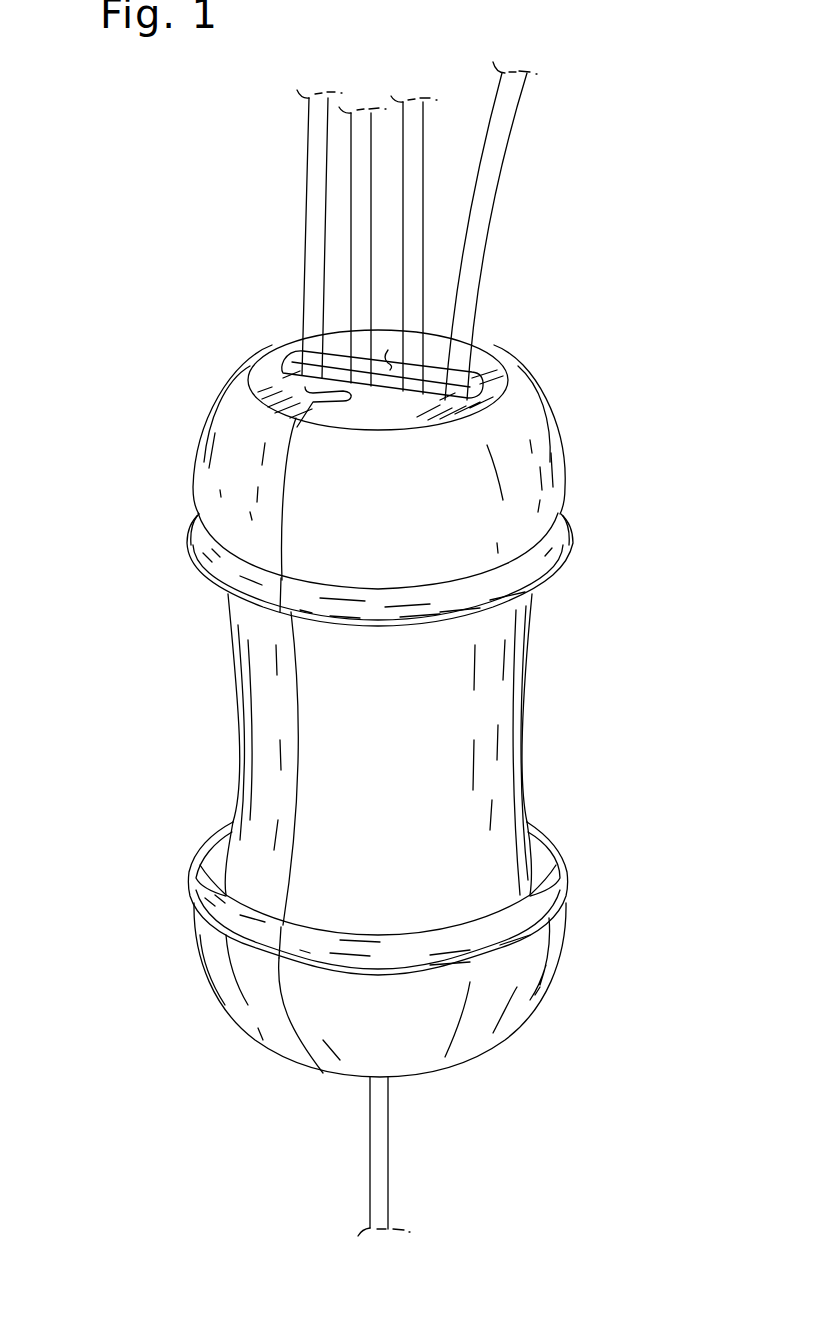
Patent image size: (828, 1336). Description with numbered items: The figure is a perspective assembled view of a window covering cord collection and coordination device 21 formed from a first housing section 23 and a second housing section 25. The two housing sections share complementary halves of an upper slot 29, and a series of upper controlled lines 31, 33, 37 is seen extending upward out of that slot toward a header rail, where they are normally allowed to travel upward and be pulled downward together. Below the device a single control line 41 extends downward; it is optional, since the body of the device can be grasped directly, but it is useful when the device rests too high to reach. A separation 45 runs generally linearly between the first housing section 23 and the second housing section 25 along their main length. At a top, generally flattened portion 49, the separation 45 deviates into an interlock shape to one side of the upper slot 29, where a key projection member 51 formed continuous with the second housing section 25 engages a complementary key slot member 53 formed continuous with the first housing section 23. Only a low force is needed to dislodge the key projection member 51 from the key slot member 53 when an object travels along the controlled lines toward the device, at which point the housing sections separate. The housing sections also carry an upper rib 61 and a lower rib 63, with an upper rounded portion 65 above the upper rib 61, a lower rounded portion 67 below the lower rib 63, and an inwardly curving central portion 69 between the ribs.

The window covering cord collection and coordination device 21 is at (158, 224).
The first housing section 23 is at (176, 350).
The second housing section 25 is at (586, 375).
The upper slot 29 is at (438, 376).
The upper controlled line 31 is at (309, 290).
The upper controlled line 33 is at (357, 184).
The upper controlled line 37 is at (483, 219).
The single control line 41 is at (385, 1167).
The separation 45 is at (300, 783).
The top generally flattened portion 49 is at (492, 355).
The key projection member 51 is at (305, 387).
The complementary key slot member 53 is at (390, 350).
The upper rib 61 is at (572, 533).
The lower rib 63 is at (558, 873).
The upper rounded portion 65 is at (552, 458).
The lower rounded portion 67 is at (538, 990).
The inwardly curving central portion 69 is at (508, 704).